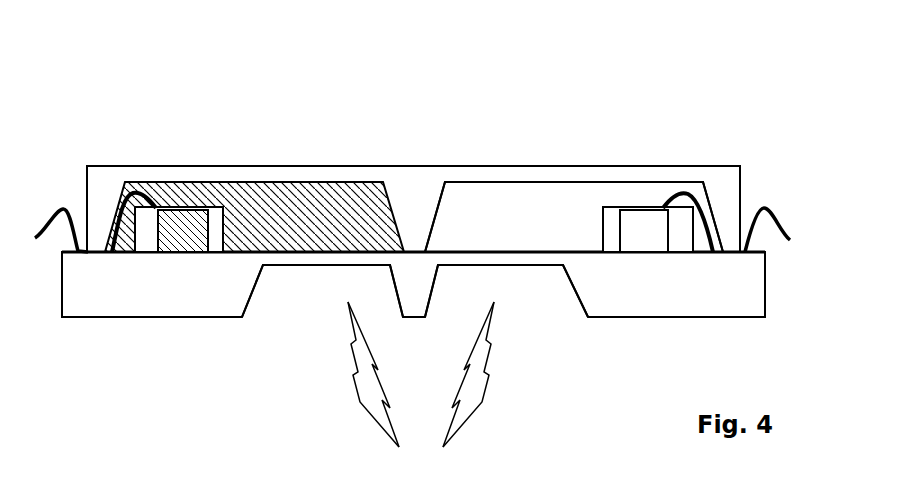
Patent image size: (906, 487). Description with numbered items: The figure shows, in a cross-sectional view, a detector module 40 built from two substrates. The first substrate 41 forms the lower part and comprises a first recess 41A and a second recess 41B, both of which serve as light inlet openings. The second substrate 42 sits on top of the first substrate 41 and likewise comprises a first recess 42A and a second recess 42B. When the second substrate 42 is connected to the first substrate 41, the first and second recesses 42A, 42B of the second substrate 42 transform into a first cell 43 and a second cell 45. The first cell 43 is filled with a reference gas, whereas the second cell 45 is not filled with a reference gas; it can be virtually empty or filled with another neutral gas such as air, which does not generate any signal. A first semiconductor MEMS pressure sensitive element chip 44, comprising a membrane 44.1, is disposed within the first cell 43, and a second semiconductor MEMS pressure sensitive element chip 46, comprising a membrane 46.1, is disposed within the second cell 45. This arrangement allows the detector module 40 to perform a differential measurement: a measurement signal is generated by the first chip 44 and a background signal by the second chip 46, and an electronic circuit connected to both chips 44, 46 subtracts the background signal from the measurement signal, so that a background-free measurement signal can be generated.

The detector module 40 is at (741, 61).
The first substrate 41 is at (668, 305).
The first recess 41A is at (302, 268).
The second recess 41B is at (532, 267).
The second substrate 42 is at (616, 176).
The first recess 42A is at (240, 186).
The second recess 42B is at (586, 186).
The first cell 43 is at (364, 190).
The first semiconductor MEMS pressure sensitive element chip 44 is at (222, 235).
The membrane 44.1 is at (202, 207).
The second cell 45 is at (490, 200).
The second semiconductor MEMS pressure sensitive element chip 46 is at (603, 229).
The membrane 46.1 is at (640, 206).